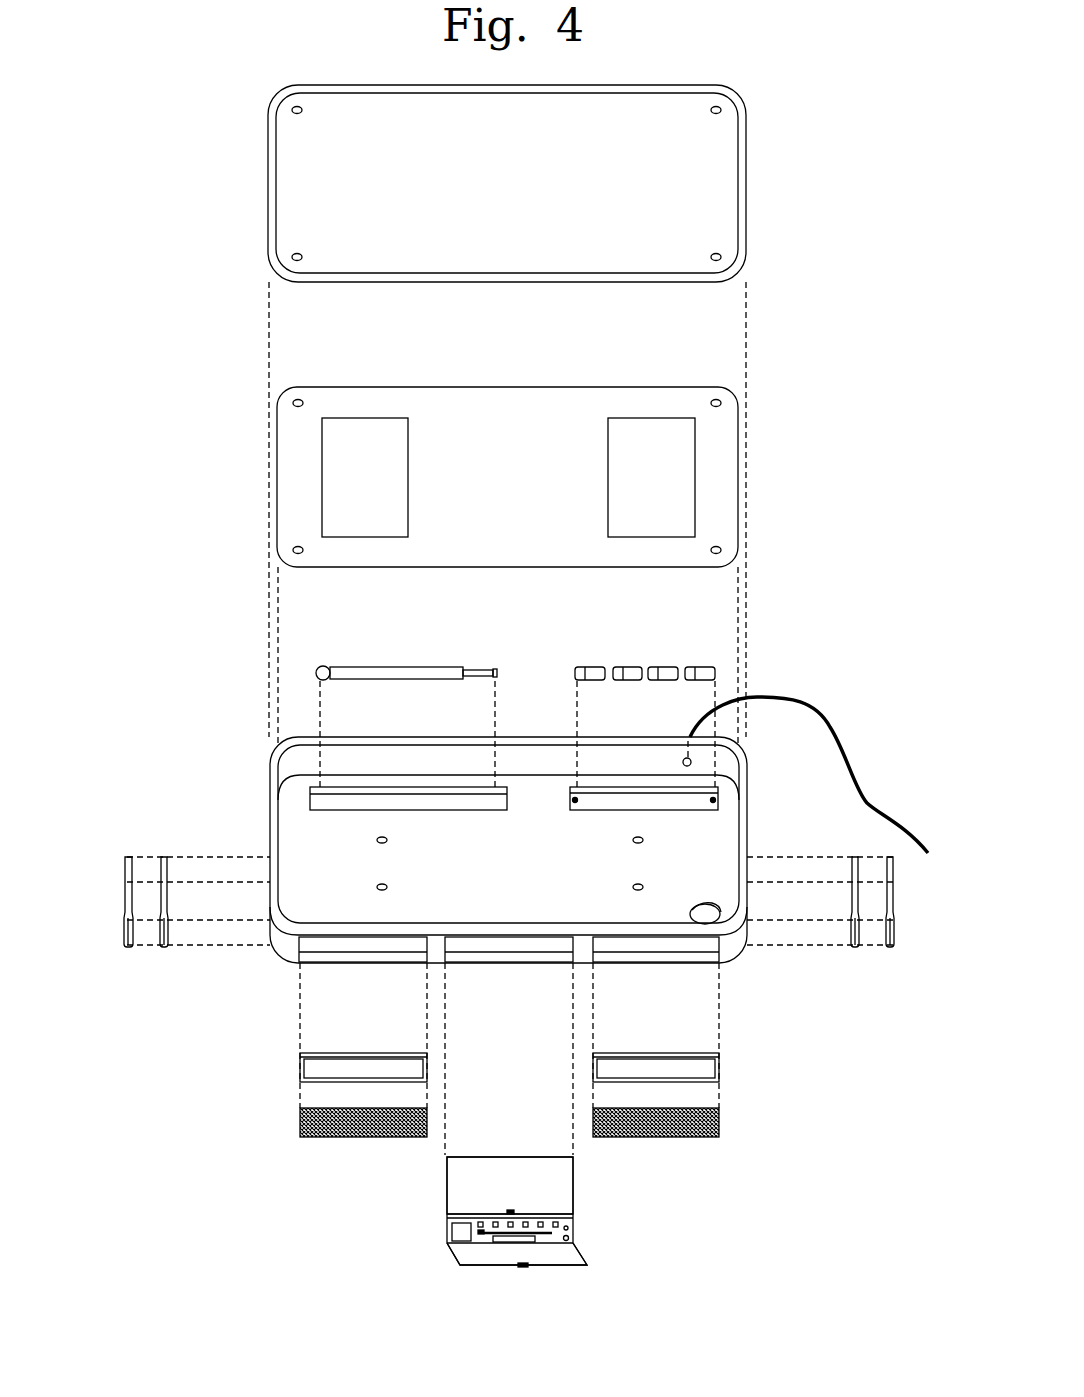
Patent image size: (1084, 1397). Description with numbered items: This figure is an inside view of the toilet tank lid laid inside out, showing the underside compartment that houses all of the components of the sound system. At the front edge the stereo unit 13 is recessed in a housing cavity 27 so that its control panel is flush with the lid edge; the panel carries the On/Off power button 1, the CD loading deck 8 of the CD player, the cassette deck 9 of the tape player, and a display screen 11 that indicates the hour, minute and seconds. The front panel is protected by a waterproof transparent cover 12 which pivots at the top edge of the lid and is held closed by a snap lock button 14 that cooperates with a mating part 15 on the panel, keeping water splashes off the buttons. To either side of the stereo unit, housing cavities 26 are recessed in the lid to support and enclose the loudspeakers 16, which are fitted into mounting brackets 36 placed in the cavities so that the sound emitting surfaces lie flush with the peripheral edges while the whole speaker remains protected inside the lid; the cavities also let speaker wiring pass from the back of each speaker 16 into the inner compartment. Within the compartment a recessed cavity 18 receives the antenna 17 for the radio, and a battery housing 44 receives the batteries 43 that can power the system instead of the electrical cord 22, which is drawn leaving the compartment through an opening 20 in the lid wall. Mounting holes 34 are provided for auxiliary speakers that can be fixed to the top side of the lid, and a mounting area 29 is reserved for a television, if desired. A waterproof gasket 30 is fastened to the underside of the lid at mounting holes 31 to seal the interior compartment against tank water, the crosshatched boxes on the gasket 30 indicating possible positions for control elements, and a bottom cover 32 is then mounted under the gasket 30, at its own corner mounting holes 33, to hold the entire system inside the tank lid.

The On/Off power button 1 is at (571, 1238).
The CD loading deck 8 is at (481, 1236).
The cassette deck 9 is at (505, 1243).
The display screen 11 is at (452, 1236).
The waterproof transparent cover 12 is at (572, 1267).
The stereo unit 13 is at (470, 1213).
The snap lock button 14 is at (523, 1269).
The mating part 15 is at (510, 1209).
The loudspeaker 16 is at (130, 950).
The antenna 17 is at (383, 667).
The recessed cavity 18 is at (336, 805).
The cable hole 20 is at (687, 766).
The electrical cord 22 is at (808, 702).
The housing cavity 26 is at (362, 962).
The housing cavity 27 is at (507, 962).
The mounting area 29 is at (694, 909).
The waterproof gasket 30 is at (494, 476).
The mounting holes 31 is at (298, 403).
The bottom cover 32 is at (494, 184).
The screw hole 33 is at (297, 110).
The mounting holes 34 is at (386, 840).
The mounting brackets 36 is at (165, 950).
The batteries 43 is at (594, 667).
The battery housing 44 is at (599, 805).